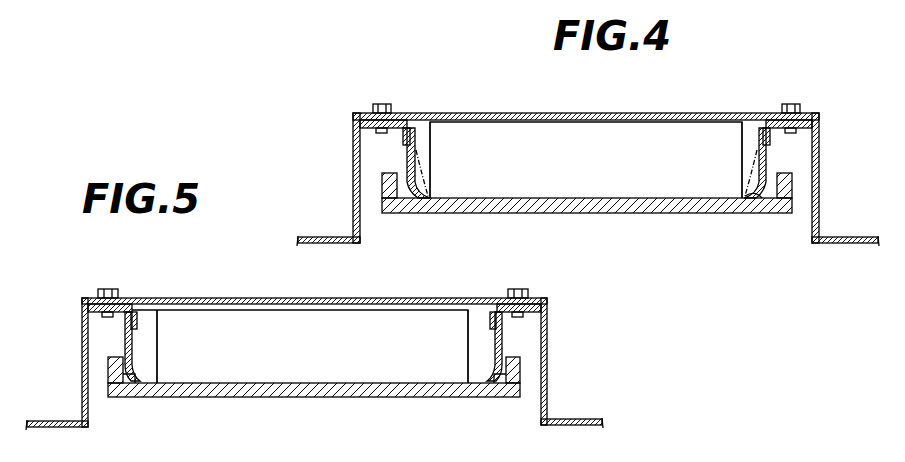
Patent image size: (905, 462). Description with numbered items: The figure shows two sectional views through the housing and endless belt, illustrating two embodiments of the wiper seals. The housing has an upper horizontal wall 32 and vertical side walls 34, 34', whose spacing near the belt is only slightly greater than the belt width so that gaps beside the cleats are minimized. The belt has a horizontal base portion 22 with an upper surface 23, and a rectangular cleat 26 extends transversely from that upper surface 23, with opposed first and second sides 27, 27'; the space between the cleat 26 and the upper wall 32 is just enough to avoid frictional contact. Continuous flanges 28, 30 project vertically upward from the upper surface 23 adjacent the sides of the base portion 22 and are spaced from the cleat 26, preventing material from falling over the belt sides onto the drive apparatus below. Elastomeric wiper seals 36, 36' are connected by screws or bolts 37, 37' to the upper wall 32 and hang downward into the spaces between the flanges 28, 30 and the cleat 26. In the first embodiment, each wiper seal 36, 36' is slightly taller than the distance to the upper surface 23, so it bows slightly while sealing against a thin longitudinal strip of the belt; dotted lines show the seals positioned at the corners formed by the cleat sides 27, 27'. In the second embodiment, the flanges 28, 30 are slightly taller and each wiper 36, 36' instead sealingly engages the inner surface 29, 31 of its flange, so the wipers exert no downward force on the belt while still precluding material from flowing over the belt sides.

In FIG. 4, the horizontal base portion 22 is at (607, 214).
In FIG. 5, the horizontal base portion 22 is at (314, 390).
In FIG. 4, the upper surface 23 is at (765, 198).
In FIG. 4, the cleat 26 is at (505, 132).
In FIG. 5, the cleat 26 is at (235, 315).
In FIG. 4, the first side of cleat 27 is at (440, 132).
In FIG. 5, the first side of cleat 27 is at (178, 323).
In FIG. 4, the second side of cleat 27' is at (730, 132).
In FIG. 5, the second side of cleat 27' is at (458, 323).
In FIG. 4, the flange 28 is at (385, 214).
In FIG. 5, the flange 28 is at (115, 383).
In FIG. 5, the inner surface of flange 29 is at (126, 374).
In FIG. 4, the flange 30 is at (783, 214).
In FIG. 5, the flange 30 is at (513, 398).
In FIG. 5, the inner surface of flange 31 is at (502, 376).
In FIG. 4, the upper horizontal wall 32 is at (560, 113).
In FIG. 5, the upper horizontal wall 32 is at (317, 298).
In FIG. 4, the vertical side wall 34 is at (352, 179).
In FIG. 5, the vertical side wall 34 is at (77, 364).
In FIG. 4, the vertical side wall 34' is at (824, 179).
In FIG. 5, the vertical side wall 34' is at (559, 363).
In FIG. 4, the wiper seal 36 is at (372, 163).
In FIG. 5, the wiper seal 36 is at (81, 346).
In FIG. 4, the wiper seal 36' is at (808, 163).
In FIG. 5, the wiper seal 36' is at (548, 346).
In FIG. 4, the bolt 37 is at (361, 100).
In FIG. 5, the bolt 37 is at (81, 289).
In FIG. 4, the bolt 37' is at (812, 100).
In FIG. 5, the bolt 37' is at (542, 287).